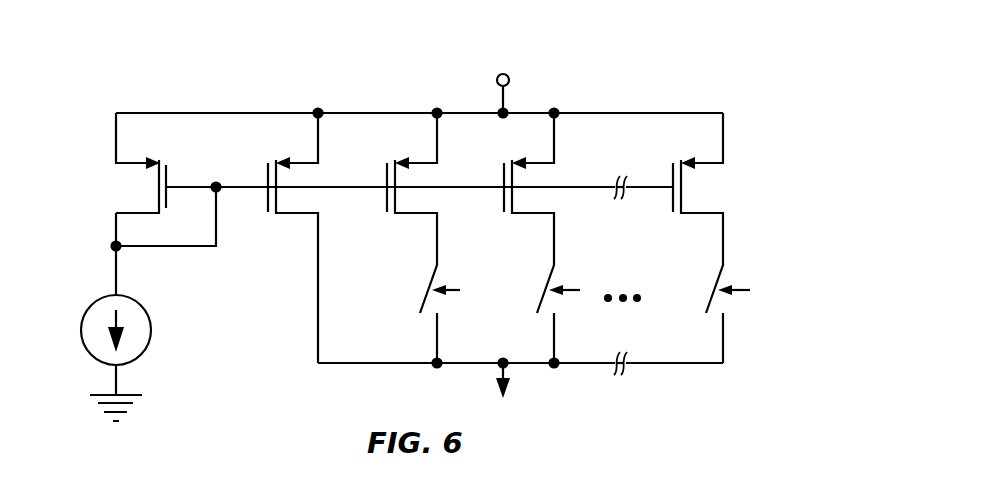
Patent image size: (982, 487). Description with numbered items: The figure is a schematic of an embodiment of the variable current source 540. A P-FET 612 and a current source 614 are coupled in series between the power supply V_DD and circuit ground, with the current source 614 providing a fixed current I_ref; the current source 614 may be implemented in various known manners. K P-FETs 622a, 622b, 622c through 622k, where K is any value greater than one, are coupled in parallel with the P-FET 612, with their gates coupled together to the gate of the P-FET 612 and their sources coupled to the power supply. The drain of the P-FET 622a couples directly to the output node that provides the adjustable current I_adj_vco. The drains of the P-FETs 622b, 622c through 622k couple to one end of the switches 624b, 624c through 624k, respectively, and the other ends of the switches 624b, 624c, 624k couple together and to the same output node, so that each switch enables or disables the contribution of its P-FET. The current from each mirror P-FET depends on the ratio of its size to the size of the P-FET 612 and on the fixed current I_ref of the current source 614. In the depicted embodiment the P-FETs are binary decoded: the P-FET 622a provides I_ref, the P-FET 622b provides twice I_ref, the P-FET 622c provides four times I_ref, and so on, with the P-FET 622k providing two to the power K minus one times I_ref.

The variable current source 540 is at (106, 77).
The P-FET 612 is at (167, 170).
The current source 614 is at (94, 303).
The P-FET 622a is at (294, 214).
The P-FET 622b is at (413, 214).
The P-FET 622c is at (530, 214).
The P-FET 622k is at (699, 214).
The switch 624b is at (427, 294).
The switch 624c is at (544, 294).
The switch 624k is at (713, 294).